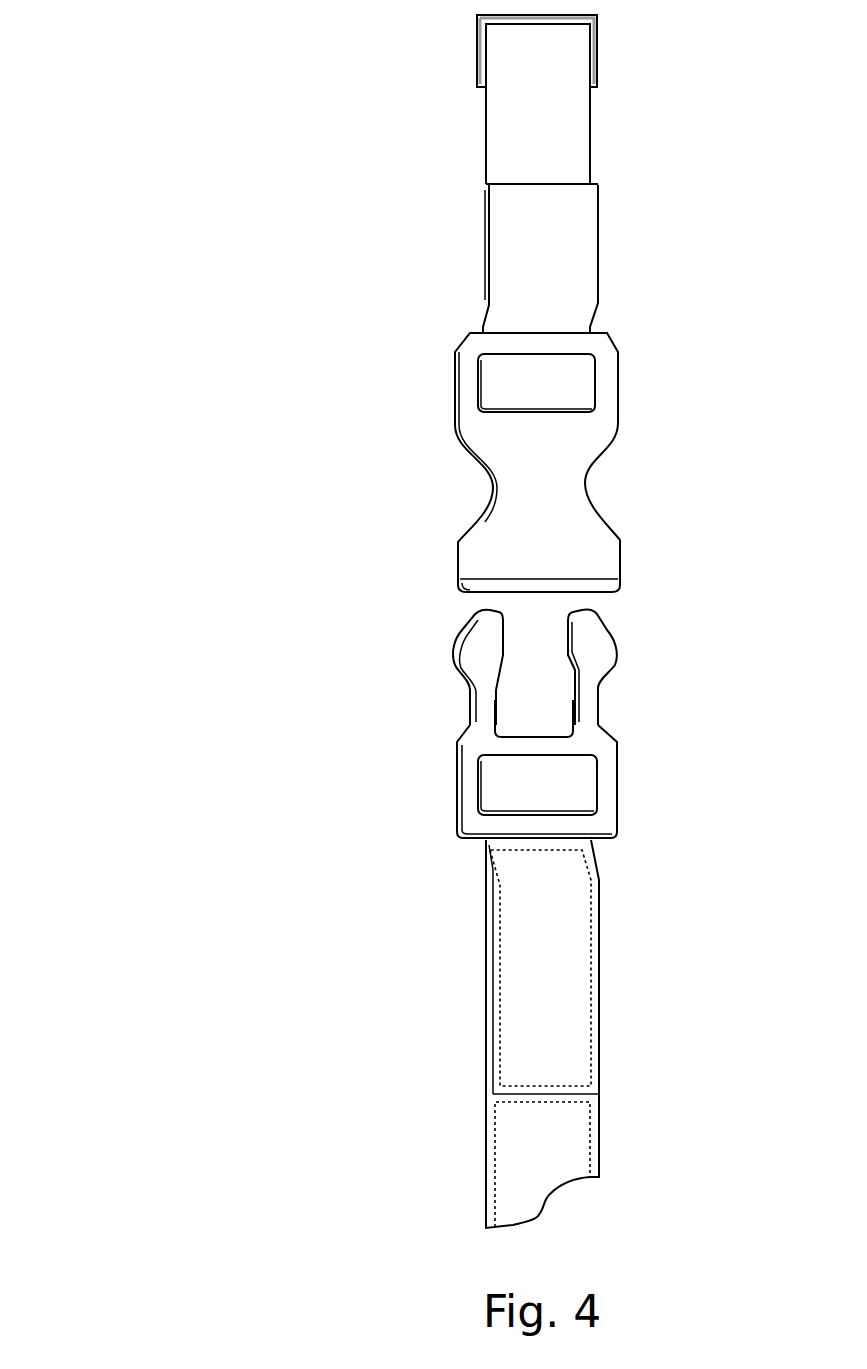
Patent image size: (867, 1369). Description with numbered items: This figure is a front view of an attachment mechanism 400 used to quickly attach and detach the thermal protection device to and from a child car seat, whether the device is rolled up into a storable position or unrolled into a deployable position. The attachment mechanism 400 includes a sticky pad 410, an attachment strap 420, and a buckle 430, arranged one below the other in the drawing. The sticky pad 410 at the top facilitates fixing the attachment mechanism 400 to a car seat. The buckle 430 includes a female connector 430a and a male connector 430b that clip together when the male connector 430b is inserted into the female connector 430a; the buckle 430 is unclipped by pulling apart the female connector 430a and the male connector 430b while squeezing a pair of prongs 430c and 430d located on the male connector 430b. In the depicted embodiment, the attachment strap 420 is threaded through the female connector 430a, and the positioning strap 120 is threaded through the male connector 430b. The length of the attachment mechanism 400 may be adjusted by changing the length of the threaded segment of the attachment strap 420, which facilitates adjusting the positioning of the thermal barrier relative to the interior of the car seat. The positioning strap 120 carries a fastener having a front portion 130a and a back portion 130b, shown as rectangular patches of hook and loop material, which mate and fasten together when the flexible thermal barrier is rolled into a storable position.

The attachment mechanism 400 is at (118, 52).
The sticky pad 410 is at (477, 60).
The attachment strap 420 is at (487, 186).
The buckle 430 is at (247, 605).
The female connector 430a is at (457, 428).
The male connector 430b is at (457, 797).
The prong 430c is at (457, 662).
The prong 430d is at (621, 659).
The positioning strap 120 is at (487, 1005).
The front portion 130a is at (587, 970).
The back portion 130b is at (587, 1138).